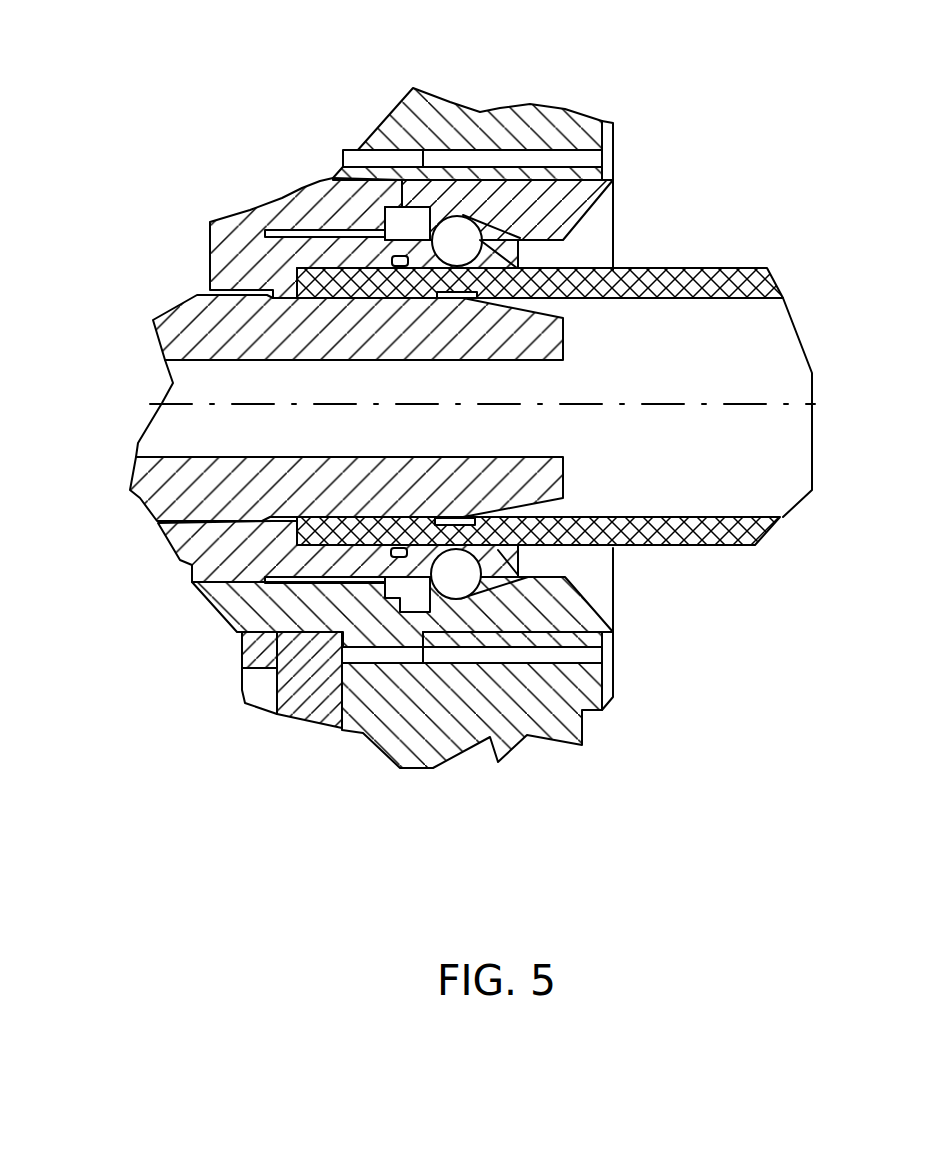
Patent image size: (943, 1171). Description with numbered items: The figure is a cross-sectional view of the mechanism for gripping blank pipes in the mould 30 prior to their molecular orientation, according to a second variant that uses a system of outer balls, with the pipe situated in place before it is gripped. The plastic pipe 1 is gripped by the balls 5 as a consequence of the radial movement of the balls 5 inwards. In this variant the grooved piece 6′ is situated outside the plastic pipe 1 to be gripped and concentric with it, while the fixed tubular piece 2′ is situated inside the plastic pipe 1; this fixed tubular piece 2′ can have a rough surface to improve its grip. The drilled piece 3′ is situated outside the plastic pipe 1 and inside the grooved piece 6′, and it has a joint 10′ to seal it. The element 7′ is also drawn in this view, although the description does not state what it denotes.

The plastic pipe 1 is at (672, 535).
The fixed tubular piece 2′ is at (167, 490).
The drilled piece 3′ is at (237, 243).
The balls 5 is at (413, 227).
The grooved piece 6′ is at (560, 215).
The rolling ball 7′ is at (455, 242).
The joint 10′ is at (397, 258).
The mould 30 is at (303, 603).